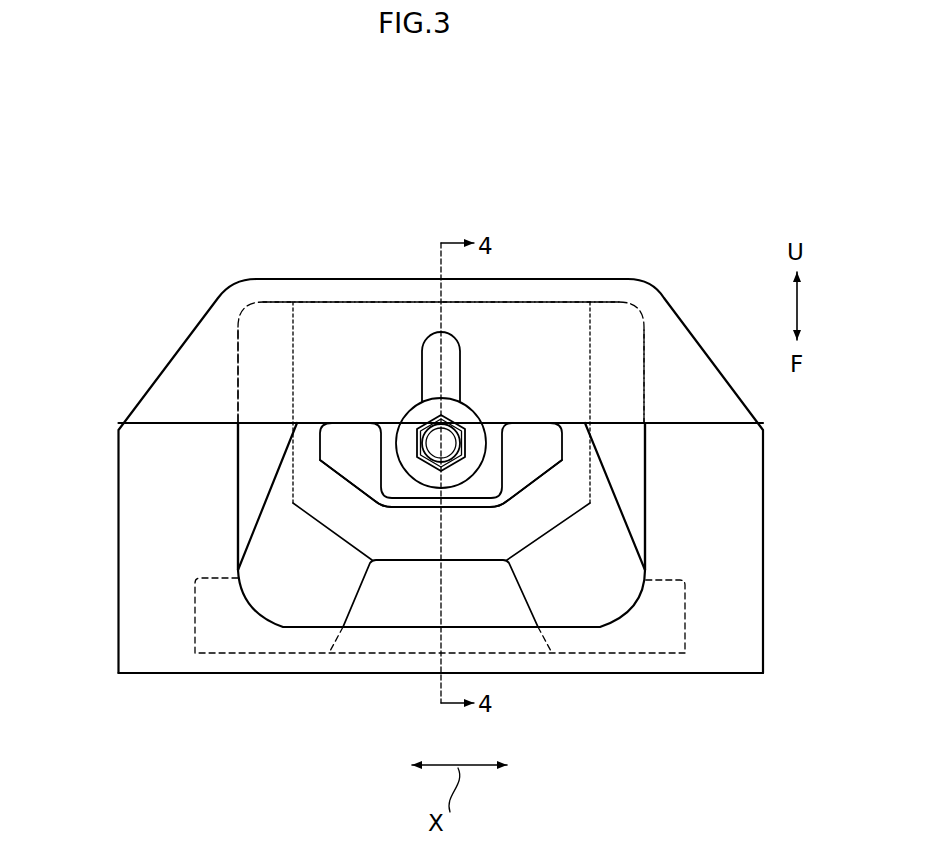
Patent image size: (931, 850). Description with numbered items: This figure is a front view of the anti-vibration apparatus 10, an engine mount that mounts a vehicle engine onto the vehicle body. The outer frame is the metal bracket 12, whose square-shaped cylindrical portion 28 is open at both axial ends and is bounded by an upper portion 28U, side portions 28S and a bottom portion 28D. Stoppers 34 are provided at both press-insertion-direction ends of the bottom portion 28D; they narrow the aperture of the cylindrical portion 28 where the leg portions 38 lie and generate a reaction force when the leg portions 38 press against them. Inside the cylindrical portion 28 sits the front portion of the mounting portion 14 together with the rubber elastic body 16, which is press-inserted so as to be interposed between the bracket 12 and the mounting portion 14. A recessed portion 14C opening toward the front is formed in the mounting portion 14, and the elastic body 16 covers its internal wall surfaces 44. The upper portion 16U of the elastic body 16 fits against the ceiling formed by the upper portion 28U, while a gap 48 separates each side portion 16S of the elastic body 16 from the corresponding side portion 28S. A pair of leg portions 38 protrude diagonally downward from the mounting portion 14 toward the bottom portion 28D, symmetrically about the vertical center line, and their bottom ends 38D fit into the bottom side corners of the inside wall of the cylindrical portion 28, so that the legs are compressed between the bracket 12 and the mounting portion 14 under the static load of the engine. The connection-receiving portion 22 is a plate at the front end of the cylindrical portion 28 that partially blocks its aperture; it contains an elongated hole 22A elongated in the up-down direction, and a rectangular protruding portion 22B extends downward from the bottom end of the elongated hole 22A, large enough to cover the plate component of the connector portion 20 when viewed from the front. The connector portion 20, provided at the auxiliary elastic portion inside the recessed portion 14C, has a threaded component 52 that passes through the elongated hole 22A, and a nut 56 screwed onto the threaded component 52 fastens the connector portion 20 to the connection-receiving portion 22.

The anti-vibration apparatus 10 is at (283, 147).
The bracket 12 is at (715, 251).
The mounting portion 14 is at (600, 333).
The recessed portion 14C is at (523, 470).
The elastic body 16 is at (338, 297).
The upper portion of the elastic body 16U is at (390, 300).
The side portion of the elastic body 16S is at (290, 340).
The connector portion 20 is at (395, 432).
The connection-receiving portion 22 is at (522, 428).
The elongated hole 22A is at (459, 357).
The protruding portion 22B is at (380, 468).
The cylindrical portion 28 is at (560, 276).
The upper portion of the cylindrical portion 28U is at (512, 279).
The side portion of the cylindrical portion 28S is at (244, 466).
The bottom portion of the cylindrical portion 28D is at (337, 673).
The stopper 34 is at (372, 627).
The leg portion 38 is at (258, 504).
The bottom end of the leg portion 38D is at (230, 655).
The internal wall surface of the recessed portion 44 is at (326, 440).
The gap 48 is at (250, 410).
The threaded component 52 is at (413, 435).
The nut 56 is at (432, 420).